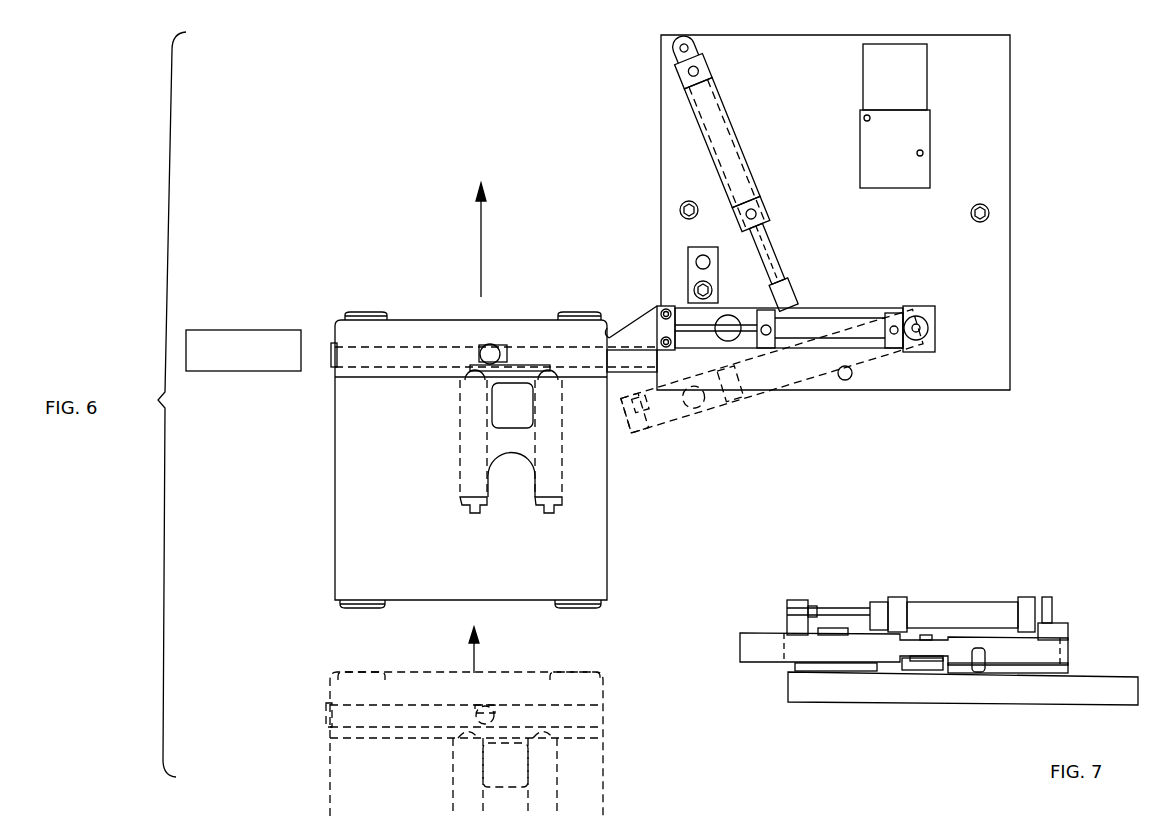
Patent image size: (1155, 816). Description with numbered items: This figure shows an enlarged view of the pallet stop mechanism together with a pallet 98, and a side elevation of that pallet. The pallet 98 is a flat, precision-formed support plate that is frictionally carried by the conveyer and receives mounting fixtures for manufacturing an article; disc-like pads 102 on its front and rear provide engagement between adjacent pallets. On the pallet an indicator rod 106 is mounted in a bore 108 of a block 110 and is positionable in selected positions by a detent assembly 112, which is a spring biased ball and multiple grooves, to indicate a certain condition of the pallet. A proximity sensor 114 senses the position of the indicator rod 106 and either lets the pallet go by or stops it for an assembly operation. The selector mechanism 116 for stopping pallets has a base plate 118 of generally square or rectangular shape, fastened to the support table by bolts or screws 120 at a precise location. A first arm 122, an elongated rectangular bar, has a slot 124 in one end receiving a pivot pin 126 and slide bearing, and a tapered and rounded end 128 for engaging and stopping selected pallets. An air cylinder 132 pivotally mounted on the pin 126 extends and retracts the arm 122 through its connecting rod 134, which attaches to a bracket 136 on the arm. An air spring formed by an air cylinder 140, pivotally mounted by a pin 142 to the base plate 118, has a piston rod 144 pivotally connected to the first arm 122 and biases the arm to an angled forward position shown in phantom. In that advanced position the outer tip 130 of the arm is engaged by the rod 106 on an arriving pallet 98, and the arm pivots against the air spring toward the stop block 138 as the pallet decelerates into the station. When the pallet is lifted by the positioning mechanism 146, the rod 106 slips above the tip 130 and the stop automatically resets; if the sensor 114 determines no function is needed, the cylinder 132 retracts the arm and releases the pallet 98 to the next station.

In FIG. 6, the pallet 98 is at (367, 480).
In FIG. 6, the disc-like pads 102 is at (365, 312).
In FIG. 6, the indicator rod 106 is at (623, 365).
In FIG. 6, the bore 108 is at (400, 380).
In FIG. 6, the block 110 is at (528, 333).
In FIG. 6, the detent assembly 112 is at (490, 345).
In FIG. 6, the proximity sensor 114 is at (222, 342).
In FIG. 6, the selector mechanism 116 is at (1070, 78).
In FIG. 6, the base plate 118 is at (1004, 150).
In FIG. 6, the bolts or screws 120 is at (681, 210).
In FIG. 6, the first arm 122 is at (855, 306).
In FIG. 6, the slot 124 is at (867, 340).
In FIG. 6, the pivot pin 126 is at (918, 322).
In FIG. 7, the pivot pin 126 is at (1048, 600).
In FIG. 7, the tapered and rounded end 128 is at (1070, 652).
In FIG. 6, the outer tip 130 is at (607, 333).
In FIG. 7, the air cylinder 132 is at (942, 605).
In FIG. 7, the connecting rod 134 is at (845, 606).
In FIG. 7, the bracket 136 is at (790, 598).
In FIG. 6, the stop block 138 is at (695, 290).
In FIG. 6, the air spring air cylinder 140 is at (742, 169).
In FIG. 6, the pin 142 is at (659, 64).
In FIG. 6, the piston rod 144 is at (808, 253).
In FIG. 7, the positioning mechanism 146 is at (930, 670).